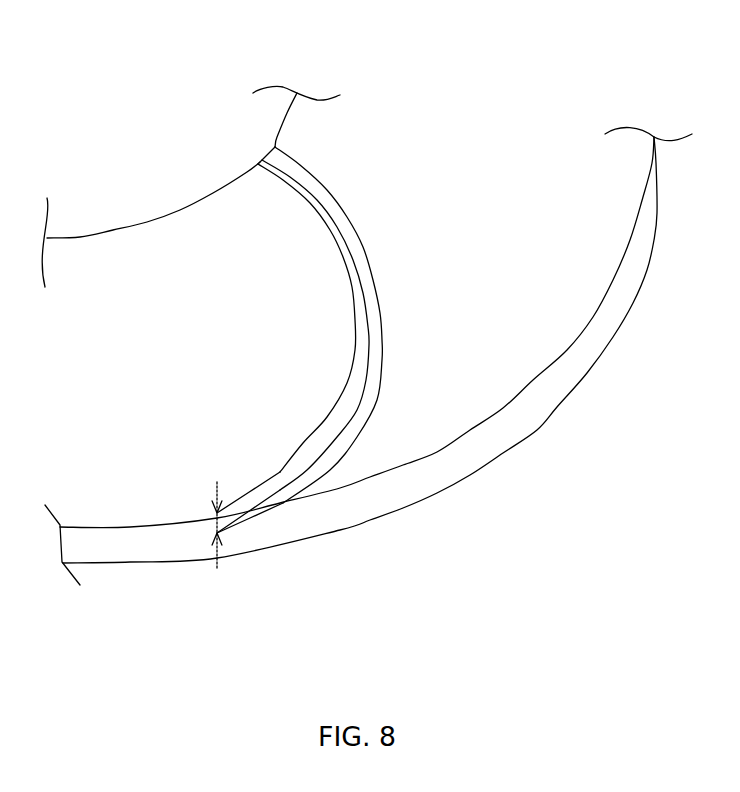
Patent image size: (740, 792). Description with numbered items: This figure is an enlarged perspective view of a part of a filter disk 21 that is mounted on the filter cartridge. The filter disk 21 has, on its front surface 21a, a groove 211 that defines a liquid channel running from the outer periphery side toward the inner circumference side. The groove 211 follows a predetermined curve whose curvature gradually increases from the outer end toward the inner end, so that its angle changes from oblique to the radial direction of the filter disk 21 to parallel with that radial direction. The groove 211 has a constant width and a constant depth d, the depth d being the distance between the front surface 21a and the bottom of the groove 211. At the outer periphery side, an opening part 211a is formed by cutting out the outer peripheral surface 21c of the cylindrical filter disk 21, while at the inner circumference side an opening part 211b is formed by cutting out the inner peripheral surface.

The filter disk 21 is at (110, 123).
The front surface 21a is at (522, 280).
The outer peripheral surface 21c is at (398, 483).
The groove 211 is at (367, 247).
The opening part 211a is at (227, 480).
The opening part 211b is at (249, 128).
The depth d is at (212, 528).